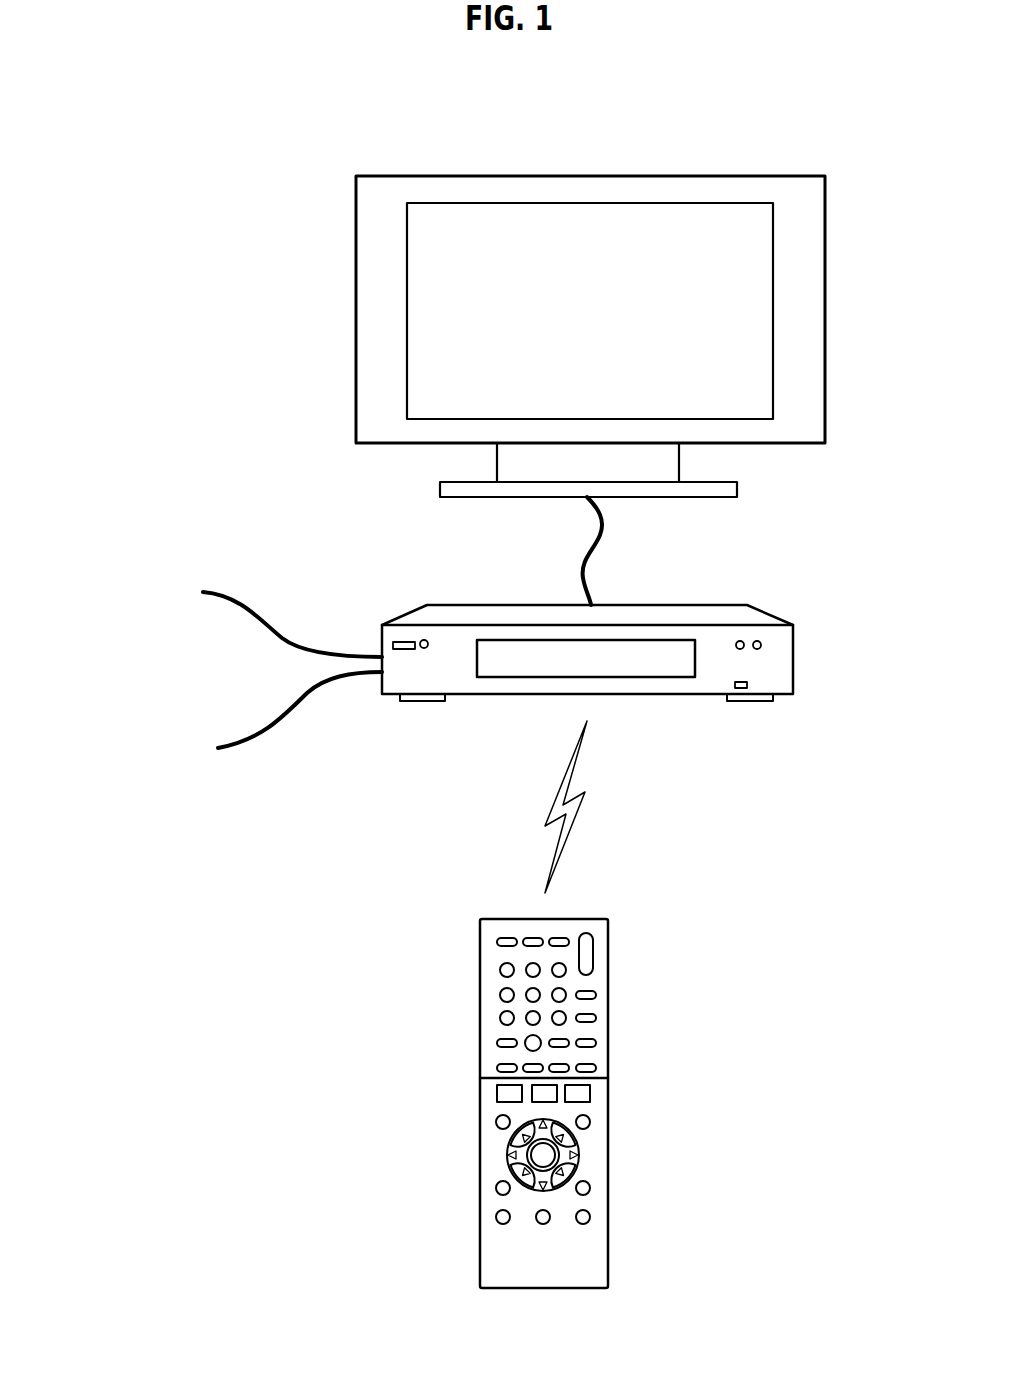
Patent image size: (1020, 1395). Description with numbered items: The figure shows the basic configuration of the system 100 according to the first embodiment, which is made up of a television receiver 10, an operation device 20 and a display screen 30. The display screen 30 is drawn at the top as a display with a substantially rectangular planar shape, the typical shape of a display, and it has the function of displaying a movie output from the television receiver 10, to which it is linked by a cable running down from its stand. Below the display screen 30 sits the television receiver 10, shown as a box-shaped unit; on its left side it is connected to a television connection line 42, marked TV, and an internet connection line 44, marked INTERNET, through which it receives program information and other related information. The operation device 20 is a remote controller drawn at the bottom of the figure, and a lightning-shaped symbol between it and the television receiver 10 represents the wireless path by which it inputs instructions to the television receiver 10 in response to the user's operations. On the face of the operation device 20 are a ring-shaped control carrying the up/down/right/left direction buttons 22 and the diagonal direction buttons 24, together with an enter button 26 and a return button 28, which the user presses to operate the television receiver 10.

The system 100 is at (130, 165).
The display screen 30 is at (588, 176).
The television receiver 10 is at (690, 605).
The television connection line 42 is at (287, 638).
The internet connection line 44 is at (300, 707).
The operation device 20 is at (551, 1075).
The up/down/right/left direction buttons 22 is at (578, 1155).
The diagonal direction buttons 24 is at (518, 1136).
The enter button 26 is at (560, 1140).
The return button 28 is at (496, 1188).